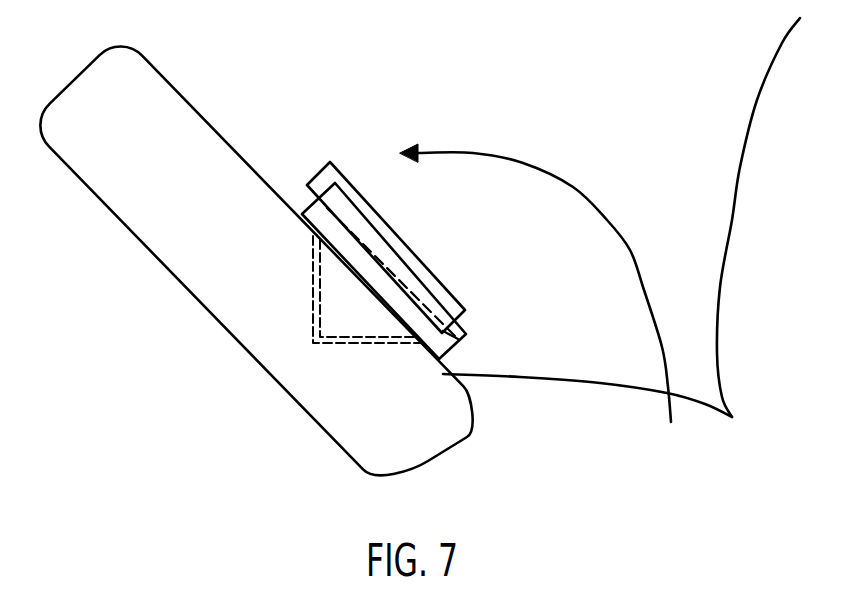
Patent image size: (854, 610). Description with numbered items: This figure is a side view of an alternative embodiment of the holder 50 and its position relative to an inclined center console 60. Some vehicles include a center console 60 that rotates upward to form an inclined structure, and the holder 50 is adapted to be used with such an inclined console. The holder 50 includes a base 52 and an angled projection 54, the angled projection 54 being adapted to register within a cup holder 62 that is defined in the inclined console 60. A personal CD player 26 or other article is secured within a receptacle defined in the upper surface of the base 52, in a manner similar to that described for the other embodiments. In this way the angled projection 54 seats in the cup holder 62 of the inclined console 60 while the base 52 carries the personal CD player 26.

The personal CD player 26 is at (331, 166).
The holder 50 is at (472, 322).
The base 52 is at (456, 345).
The angled projection 54 is at (358, 319).
The center console 60 is at (173, 110).
The cup holder 62 is at (314, 300).